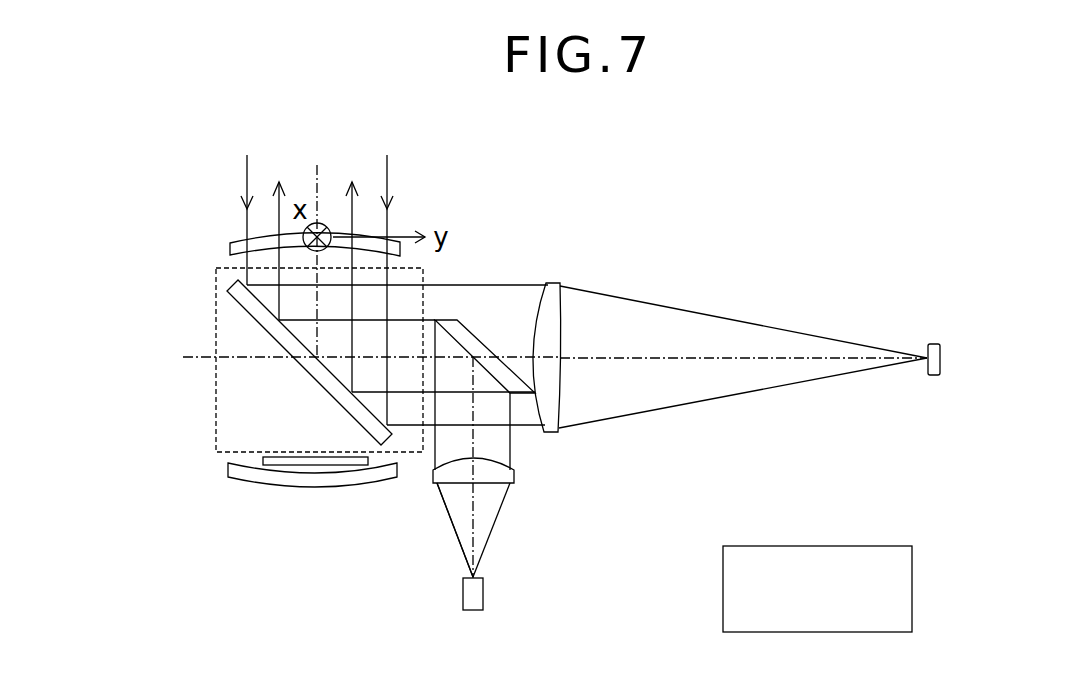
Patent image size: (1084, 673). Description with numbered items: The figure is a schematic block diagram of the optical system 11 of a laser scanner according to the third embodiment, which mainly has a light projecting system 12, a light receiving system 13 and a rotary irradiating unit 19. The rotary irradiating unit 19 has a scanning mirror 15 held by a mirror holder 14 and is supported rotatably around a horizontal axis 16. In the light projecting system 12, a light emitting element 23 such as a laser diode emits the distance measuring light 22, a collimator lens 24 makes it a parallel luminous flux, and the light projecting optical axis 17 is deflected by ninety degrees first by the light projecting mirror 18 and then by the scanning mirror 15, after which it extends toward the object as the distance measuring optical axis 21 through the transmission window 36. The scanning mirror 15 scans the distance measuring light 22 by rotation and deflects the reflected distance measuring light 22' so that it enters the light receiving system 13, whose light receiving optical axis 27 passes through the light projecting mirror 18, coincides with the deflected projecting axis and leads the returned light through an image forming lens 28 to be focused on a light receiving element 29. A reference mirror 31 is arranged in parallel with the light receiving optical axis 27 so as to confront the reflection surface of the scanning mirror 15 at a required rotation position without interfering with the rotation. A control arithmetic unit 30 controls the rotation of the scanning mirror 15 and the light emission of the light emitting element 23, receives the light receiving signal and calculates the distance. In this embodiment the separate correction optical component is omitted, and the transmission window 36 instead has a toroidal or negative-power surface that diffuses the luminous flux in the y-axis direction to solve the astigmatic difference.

The optical system 11 is at (790, 133).
The light projecting system 12 is at (528, 540).
The light receiving system 13 is at (638, 263).
The mirror holder 14 is at (216, 413).
The scanning mirror 15 is at (263, 327).
The horizontal axis 16 is at (200, 357).
The light projecting optical axis 17 is at (473, 443).
The light projecting mirror 18 is at (475, 321).
The rotary irradiating unit 19 is at (215, 311).
The distance measuring optical axis 21 is at (320, 188).
The distance measuring light 22 is at (375, 346).
The reflected distance measuring light 22' is at (636, 278).
The light emitting element 23 is at (485, 595).
The collimator lens 24 is at (516, 483).
The light receiving optical axis 27 is at (682, 360).
The image forming lens 28 is at (548, 283).
The light receiving element 29 is at (936, 344).
The control arithmetic unit 30 is at (828, 546).
The reference mirror 31 is at (273, 453).
The transmission window 36 is at (238, 243).